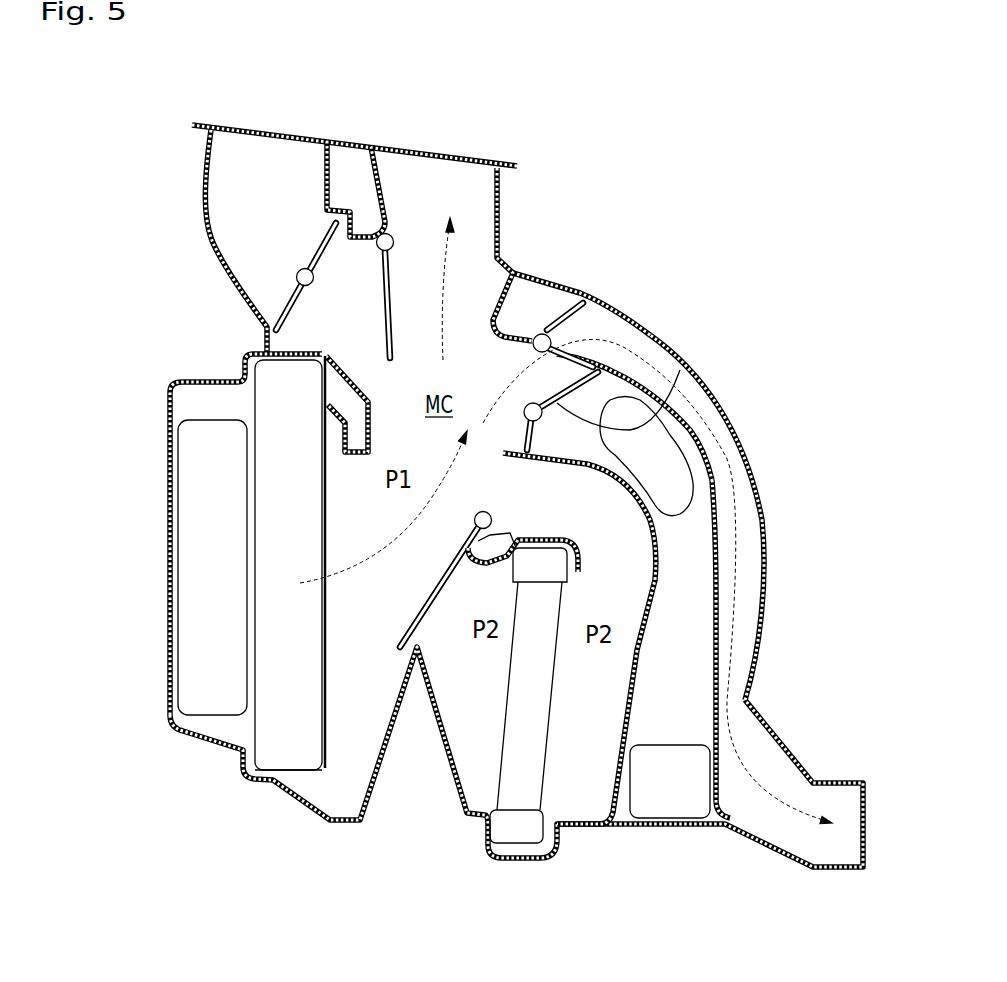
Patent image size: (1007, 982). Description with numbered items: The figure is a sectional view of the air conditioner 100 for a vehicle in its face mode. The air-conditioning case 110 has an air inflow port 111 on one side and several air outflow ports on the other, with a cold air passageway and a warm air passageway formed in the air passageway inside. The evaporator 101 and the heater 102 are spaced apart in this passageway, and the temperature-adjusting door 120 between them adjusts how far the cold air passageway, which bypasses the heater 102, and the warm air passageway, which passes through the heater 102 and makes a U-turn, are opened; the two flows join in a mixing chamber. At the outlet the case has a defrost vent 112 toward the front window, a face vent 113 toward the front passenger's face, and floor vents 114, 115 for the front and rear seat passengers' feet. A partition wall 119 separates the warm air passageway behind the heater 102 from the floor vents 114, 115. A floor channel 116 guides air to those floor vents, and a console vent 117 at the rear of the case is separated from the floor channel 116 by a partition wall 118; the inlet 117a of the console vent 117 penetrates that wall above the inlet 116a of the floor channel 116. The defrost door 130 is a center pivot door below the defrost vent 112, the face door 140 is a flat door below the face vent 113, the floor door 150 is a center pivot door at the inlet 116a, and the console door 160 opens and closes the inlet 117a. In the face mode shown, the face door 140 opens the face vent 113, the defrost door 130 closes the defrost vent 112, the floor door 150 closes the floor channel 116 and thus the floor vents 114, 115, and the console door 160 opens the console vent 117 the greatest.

The air conditioner 100 is at (722, 224).
The evaporator 101 is at (270, 752).
The heater 102 is at (515, 828).
The air-conditioning case 110 is at (150, 650).
The air inflow port 111 is at (212, 713).
The defrost vent 112 is at (266, 152).
The face vent 113 is at (450, 182).
The floor vent for the front seat 114 is at (667, 463).
The floor vent for the rear seat 115 is at (673, 800).
The floor channel 116 is at (687, 563).
The inlet of the floor channel 116a is at (600, 393).
The console vent 117 is at (743, 492).
The inlet of the console vent 117a is at (613, 315).
The partition wall 118 is at (720, 597).
The partition wall 119 is at (655, 607).
The temperature-adjusting door 120 is at (433, 590).
The defrost door 130 is at (312, 252).
The face door 140 is at (392, 262).
The floor door 150 is at (680, 392).
The console door 160 is at (560, 315).